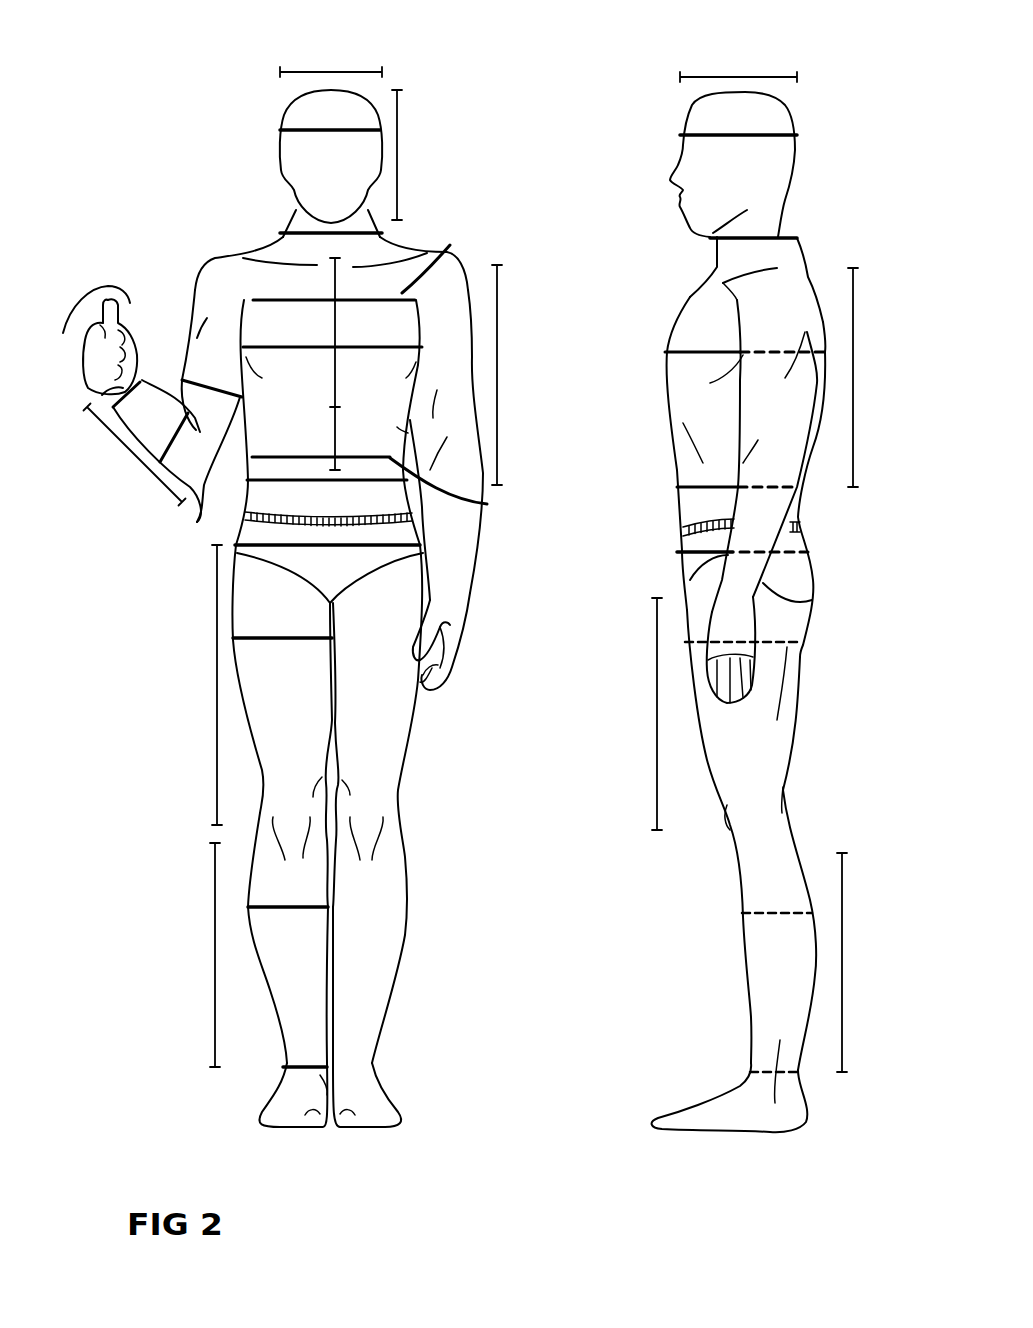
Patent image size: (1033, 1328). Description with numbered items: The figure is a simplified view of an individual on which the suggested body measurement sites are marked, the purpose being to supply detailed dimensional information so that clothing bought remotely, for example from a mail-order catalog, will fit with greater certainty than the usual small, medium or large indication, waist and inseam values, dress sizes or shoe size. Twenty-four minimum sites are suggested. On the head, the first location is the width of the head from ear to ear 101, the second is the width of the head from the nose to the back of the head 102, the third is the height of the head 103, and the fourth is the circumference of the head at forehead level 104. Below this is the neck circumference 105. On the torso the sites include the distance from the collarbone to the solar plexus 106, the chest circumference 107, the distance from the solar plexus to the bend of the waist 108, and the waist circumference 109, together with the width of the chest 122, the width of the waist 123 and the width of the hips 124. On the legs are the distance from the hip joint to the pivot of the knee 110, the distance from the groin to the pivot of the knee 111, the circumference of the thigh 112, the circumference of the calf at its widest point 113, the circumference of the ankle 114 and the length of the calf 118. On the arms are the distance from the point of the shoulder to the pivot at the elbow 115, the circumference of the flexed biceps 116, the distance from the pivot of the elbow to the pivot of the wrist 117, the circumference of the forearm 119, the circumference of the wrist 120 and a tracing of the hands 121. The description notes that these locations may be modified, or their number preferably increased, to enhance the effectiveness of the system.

The head width ear-to-ear measurement site 101 is at (340, 72).
The head width nose-to-back measurement site 102 is at (740, 77).
The head height measurement site 103 is at (399, 157).
The head circumference measurement site 104 is at (284, 130).
The neck circumference measurement site 105 is at (283, 233).
The collarbone to solar plexus distance 106 is at (330, 328).
The chest circumference measurement site 107 is at (263, 343).
The solar plexus to waist bend distance 108 is at (332, 440).
The waist circumference measurement site 109 is at (255, 487).
The hip joint to knee pivot distance 110 is at (217, 683).
The groin to knee pivot distance 111 is at (657, 712).
The thigh circumference measurement site 112 is at (292, 638).
The calf circumference measurement site 113 is at (307, 908).
The ankle circumference measurement site 114 is at (283, 1070).
The shoulder to elbow pivot distance 115 is at (499, 347).
The flexed biceps circumference measurement site 116 is at (183, 378).
The elbow pivot to wrist pivot distance 117 is at (142, 467).
The calf length measurement site 118 is at (215, 947).
The forearm circumference measurement site 119 is at (200, 497).
The wrist circumference measurement site 120 is at (102, 396).
The hand tracing 121 is at (107, 286).
The chest width measurement site 122 is at (448, 256).
The waist width measurement site 123 is at (465, 488).
The hip width measurement site 124 is at (407, 552).